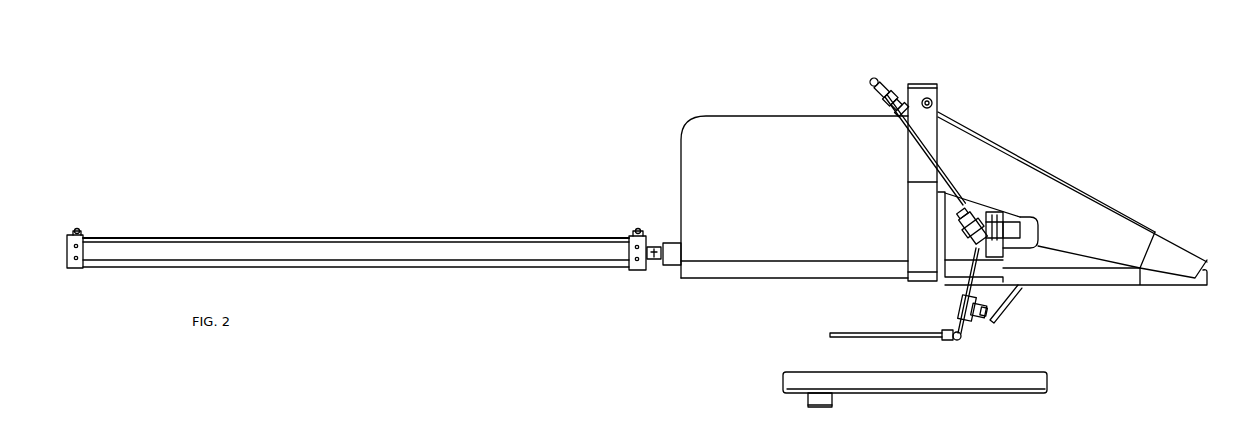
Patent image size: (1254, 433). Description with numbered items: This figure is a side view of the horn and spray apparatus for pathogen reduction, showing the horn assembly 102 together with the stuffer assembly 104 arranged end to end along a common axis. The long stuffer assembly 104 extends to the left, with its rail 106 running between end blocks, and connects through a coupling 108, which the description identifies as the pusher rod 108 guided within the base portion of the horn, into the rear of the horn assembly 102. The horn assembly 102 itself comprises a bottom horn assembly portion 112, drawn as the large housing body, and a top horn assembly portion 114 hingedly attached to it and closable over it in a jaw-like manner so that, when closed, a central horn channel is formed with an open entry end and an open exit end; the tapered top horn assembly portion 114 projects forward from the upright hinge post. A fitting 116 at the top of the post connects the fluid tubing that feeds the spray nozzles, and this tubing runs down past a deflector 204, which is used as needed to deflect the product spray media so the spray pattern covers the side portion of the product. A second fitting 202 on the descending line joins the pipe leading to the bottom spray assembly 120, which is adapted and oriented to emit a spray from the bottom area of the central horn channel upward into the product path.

The horn assembly 102 is at (968, 65).
The stuffer assembly 104 is at (356, 196).
The rail 106 is at (203, 247).
The pusher rod 108 is at (660, 242).
The bottom horn assembly portion 112 is at (718, 150).
The top horn assembly portion 114 is at (1003, 173).
The hose fitting 116 is at (898, 88).
The bottom spray assembly 120 is at (1007, 303).
The hose fitting 202 is at (977, 323).
The deflector 204 is at (1003, 213).